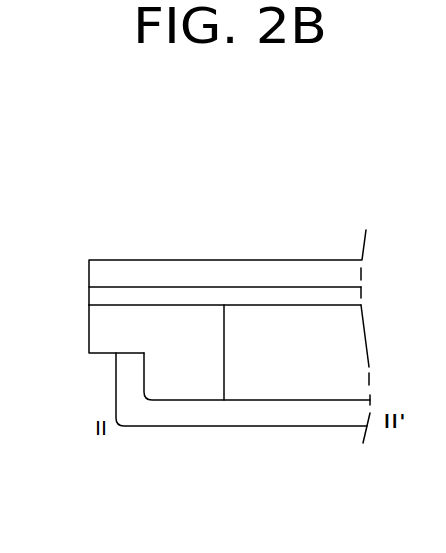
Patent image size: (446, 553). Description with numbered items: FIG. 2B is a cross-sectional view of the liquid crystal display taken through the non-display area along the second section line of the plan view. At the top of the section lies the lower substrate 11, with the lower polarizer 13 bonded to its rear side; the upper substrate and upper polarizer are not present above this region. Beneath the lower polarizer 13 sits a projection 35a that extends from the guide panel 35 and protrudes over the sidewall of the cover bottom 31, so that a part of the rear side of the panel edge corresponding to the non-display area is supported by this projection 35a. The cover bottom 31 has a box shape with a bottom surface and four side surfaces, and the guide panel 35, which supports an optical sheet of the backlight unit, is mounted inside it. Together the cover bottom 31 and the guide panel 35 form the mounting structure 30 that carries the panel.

The lower substrate 11 is at (102, 273).
The lower polarizer 13 is at (102, 294).
The projection 35a is at (102, 332).
The guide panel 35 is at (181, 391).
The cover bottom 31 is at (237, 408).
The mounting structure 30 is at (253, 484).